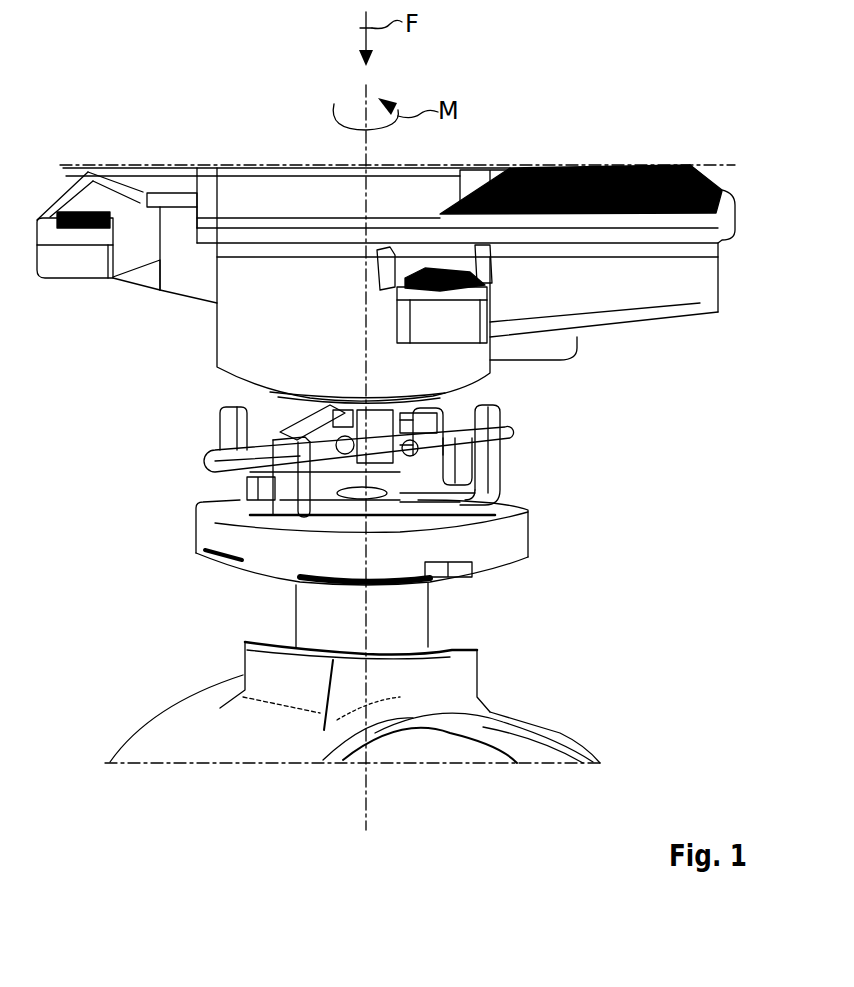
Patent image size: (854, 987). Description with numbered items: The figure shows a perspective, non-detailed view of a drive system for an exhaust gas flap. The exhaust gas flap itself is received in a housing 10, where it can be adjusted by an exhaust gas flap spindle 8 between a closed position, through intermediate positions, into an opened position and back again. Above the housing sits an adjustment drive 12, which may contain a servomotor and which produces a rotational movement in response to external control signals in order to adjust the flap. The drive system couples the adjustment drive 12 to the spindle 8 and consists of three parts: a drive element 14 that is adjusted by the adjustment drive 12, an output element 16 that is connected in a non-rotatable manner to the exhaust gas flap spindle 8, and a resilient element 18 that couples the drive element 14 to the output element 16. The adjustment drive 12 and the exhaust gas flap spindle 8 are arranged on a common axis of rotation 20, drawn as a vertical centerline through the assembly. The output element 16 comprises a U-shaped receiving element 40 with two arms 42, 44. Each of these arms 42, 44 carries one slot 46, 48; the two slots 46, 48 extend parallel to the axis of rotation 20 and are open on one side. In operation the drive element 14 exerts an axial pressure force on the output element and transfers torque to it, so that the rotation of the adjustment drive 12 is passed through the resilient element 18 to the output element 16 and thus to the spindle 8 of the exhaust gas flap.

The exhaust gas flap spindle 8 is at (390, 748).
The housing 10 is at (178, 720).
The adjustment drive 12 is at (232, 328).
The drive element 14 is at (518, 411).
The output element 16 is at (578, 473).
The resilient element 18 is at (300, 422).
The axis of rotation 20 is at (366, 823).
The U-shaped receiving element 40 is at (410, 495).
The arm 42 is at (228, 430).
The arm 44 is at (483, 480).
The slot 46 is at (265, 503).
The slot 48 is at (458, 464).